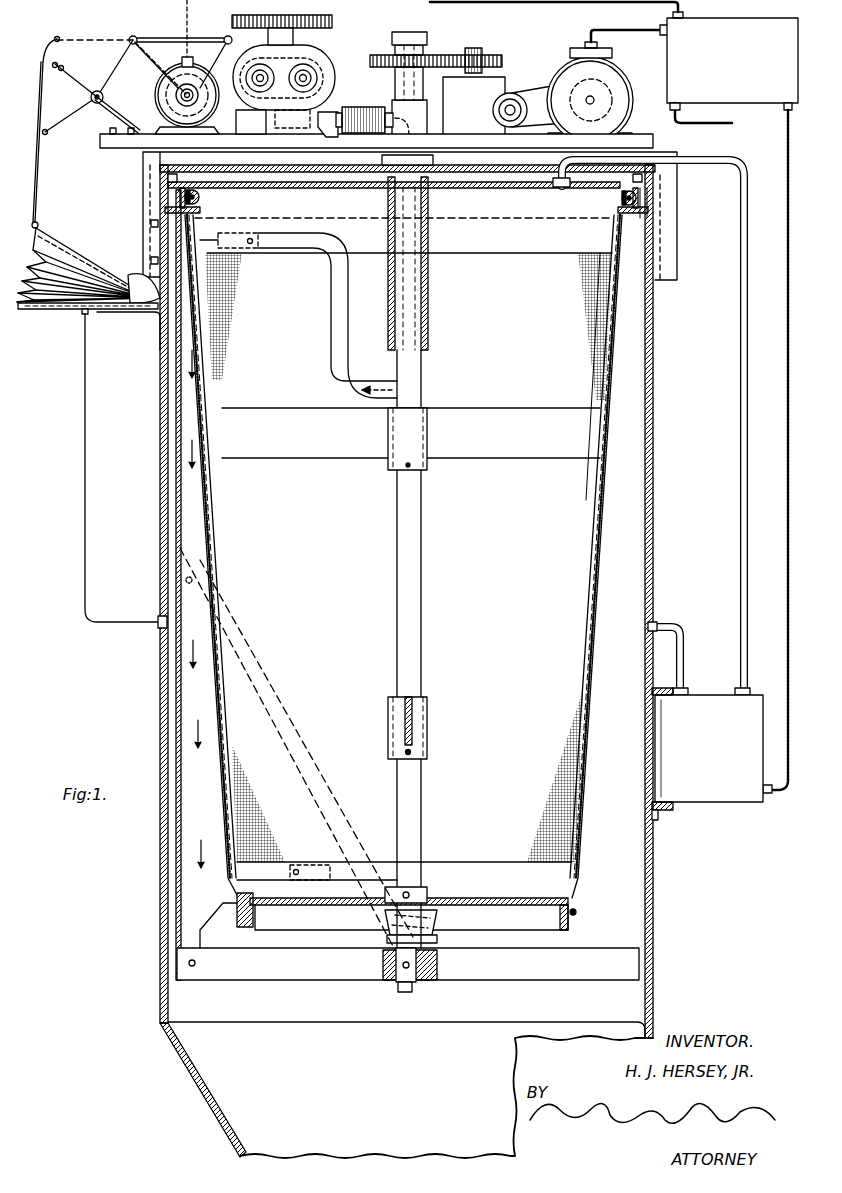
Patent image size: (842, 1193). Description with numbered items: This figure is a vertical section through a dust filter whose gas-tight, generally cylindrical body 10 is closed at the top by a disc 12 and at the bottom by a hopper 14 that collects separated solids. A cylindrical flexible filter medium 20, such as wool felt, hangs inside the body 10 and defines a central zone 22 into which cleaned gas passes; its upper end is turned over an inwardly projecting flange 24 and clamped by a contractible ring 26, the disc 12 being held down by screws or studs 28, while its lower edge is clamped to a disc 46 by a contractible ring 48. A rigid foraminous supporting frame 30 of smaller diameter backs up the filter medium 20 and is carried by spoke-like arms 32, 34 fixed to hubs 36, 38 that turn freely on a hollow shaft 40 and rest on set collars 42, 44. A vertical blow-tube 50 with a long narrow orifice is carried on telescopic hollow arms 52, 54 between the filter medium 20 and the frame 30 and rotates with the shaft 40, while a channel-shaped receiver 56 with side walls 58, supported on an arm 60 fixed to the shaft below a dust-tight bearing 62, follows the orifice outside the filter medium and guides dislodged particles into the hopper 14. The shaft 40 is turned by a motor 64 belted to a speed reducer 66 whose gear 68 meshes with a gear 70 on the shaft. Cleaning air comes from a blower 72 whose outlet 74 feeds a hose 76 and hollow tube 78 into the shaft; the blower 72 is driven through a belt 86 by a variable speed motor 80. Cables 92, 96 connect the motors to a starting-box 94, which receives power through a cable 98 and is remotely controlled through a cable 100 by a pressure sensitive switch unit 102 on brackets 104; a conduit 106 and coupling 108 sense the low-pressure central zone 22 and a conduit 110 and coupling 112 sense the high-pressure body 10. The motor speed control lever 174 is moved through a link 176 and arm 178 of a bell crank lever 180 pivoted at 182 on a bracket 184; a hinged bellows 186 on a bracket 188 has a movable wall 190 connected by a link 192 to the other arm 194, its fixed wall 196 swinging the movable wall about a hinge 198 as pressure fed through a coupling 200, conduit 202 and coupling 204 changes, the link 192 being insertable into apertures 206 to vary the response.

The body 10 is at (650, 490).
The disc 12 is at (313, 184).
The hopper 14 is at (210, 1103).
The filter medium 20 is at (218, 760).
The central zone 22 is at (470, 598).
The inwardly projecting flange 24 is at (200, 202).
The contractible ring 26 is at (184, 201).
The screws or studs 28 is at (183, 193).
The foraminous supporting frame 30 is at (585, 510).
The spoke-like arms 32 is at (502, 420).
The spoke-like arms 34 is at (428, 716).
The hub 36 is at (407, 432).
The hub 38 is at (400, 718).
The hollow shaft 40 is at (405, 573).
The set collar 42 is at (390, 472).
The set collar 44 is at (388, 752).
The disc 46 is at (538, 901).
The contractible ring 48 is at (577, 917).
The blow-tube 50 is at (215, 560).
The hollow arm 52 is at (303, 242).
The hollow arm 54 is at (253, 870).
The receiver 56 is at (180, 876).
The side wall 58 is at (207, 905).
The arm 60 is at (283, 973).
The dust-tight bearing 62 is at (430, 916).
The motor 64 is at (570, 74).
The speed reducer 66 is at (490, 88).
The gear 68 is at (488, 52).
The gear 70 is at (380, 55).
The blower 72 is at (328, 62).
The blower outlet 74 is at (333, 114).
The hose 76 is at (372, 108).
The hollow tube 78 is at (425, 116).
The variable speed motor 80 is at (176, 88).
The belt 86 is at (250, 120).
The cable 92 is at (452, 1).
The starting-box 94 is at (683, 60).
The cable 96 is at (610, 30).
The cable 98 is at (733, 125).
The remote control cable 100 is at (787, 427).
The pressure sensitive switch unit 102 is at (730, 793).
The brackets 104 is at (658, 812).
The conduit 106 is at (745, 360).
The coupling 108 is at (560, 188).
The conduit 110 is at (684, 655).
The coupling 112 is at (648, 627).
The speed control lever 174 is at (215, 58).
The link 176 is at (170, 38).
The arm 178 is at (120, 55).
The bell crank lever 180 is at (97, 78).
The pivot 182 is at (93, 104).
The bracket 184 is at (115, 115).
The bellows 186 is at (73, 277).
The bracket 188 is at (150, 336).
The movable wall 190 is at (68, 248).
The link 192 is at (42, 182).
The arm 194 is at (75, 80).
The wall 196 is at (53, 310).
The hinge 198 is at (143, 285).
The coupling 200 is at (90, 314).
The conduit 202 is at (84, 462).
The coupling 204 is at (158, 628).
The apertures 206 is at (55, 46).